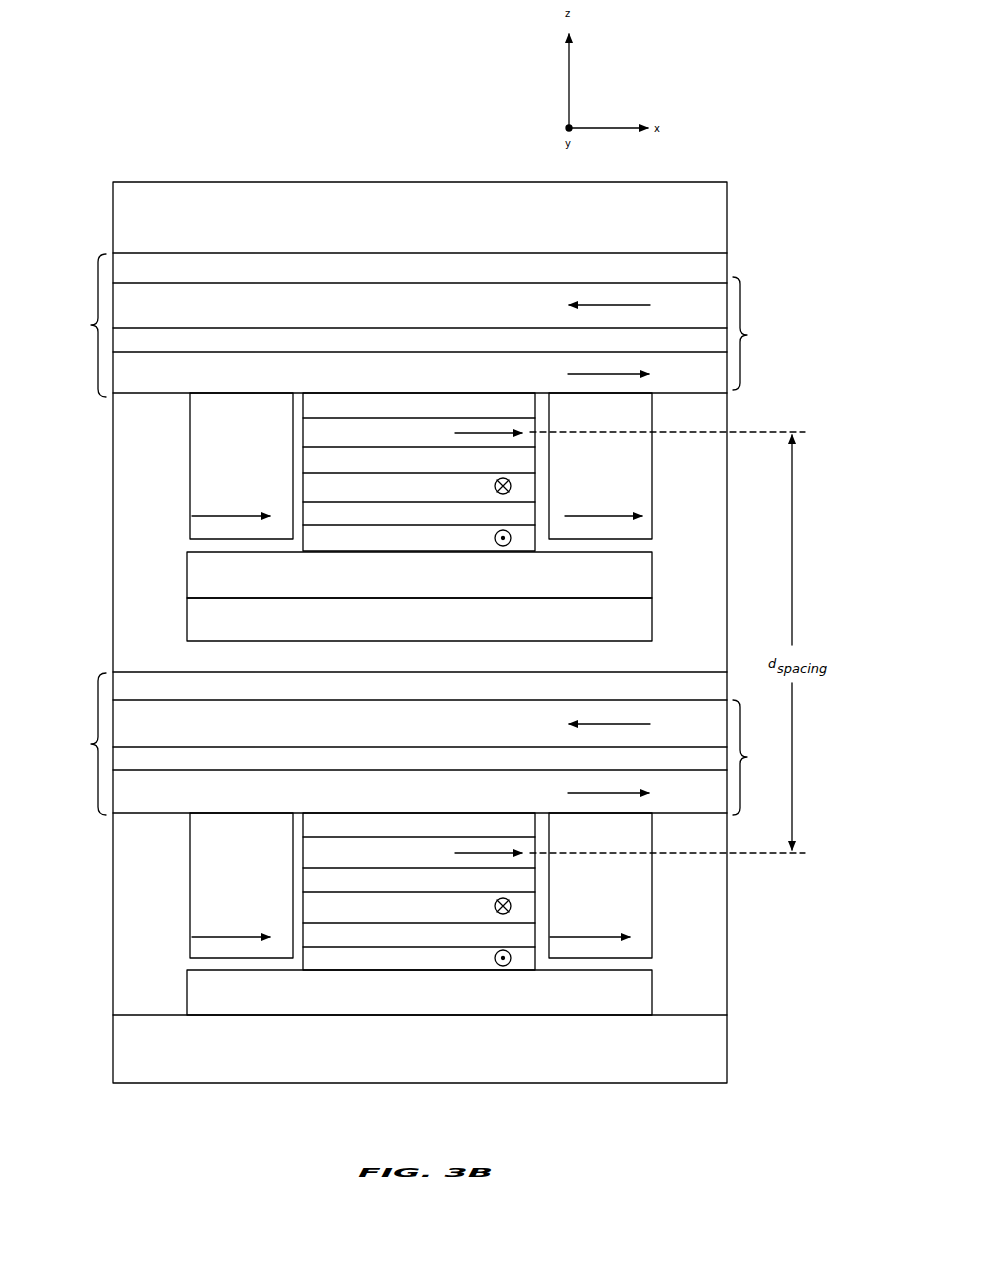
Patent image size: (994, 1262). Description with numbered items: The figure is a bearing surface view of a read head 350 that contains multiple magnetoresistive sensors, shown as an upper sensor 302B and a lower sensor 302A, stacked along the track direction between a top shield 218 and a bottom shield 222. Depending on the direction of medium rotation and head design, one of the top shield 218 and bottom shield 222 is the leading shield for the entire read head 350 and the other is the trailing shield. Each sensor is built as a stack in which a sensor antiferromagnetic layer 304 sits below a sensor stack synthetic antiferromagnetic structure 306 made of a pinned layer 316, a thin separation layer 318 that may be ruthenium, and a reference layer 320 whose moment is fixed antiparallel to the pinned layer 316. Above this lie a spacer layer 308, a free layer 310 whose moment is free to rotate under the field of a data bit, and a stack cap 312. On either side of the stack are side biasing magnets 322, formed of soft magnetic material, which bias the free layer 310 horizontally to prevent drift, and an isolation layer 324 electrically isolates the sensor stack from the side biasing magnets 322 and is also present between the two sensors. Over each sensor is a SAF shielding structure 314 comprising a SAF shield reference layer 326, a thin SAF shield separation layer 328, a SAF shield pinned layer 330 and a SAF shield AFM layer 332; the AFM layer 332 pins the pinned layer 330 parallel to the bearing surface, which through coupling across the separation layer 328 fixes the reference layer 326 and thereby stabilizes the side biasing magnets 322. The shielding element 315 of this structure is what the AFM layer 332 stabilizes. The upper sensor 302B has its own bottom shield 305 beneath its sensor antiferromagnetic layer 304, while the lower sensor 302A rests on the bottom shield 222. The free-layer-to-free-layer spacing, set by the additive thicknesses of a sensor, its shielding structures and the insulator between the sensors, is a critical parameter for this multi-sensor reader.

The read head 350 is at (258, 116).
The top shield 218 is at (420, 233).
The SAF shield AFM layer 332 is at (420, 481).
The SAF shield pinned layer 330 is at (420, 523).
The SAF shield separation layer 328 is at (420, 551).
The SAF shield reference layer 326 is at (420, 589).
The SAF shielding structure 314 is at (79, 534).
The shielding element 315 is at (757, 546).
The side biasing magnets 322 is at (421, 675).
The sensor stack synthetic antiferromagnetic structure 306 is at (542, 470).
The stack cap 312 is at (419, 619).
The free layer 310 is at (419, 647).
The spacer layer 308 is at (419, 672).
The reference layer 320 is at (419, 700).
The separation layer 318 is at (419, 726).
The pinned layer 316 is at (427, 748).
The sensor antiferromagnetic layer 304 is at (419, 783).
The bottom shield 305 is at (419, 619).
The bottom shield 222 is at (420, 1035).
The magnetoresistive sensor 302B is at (748, 421).
The magnetoresistive sensor 302A is at (742, 871).
The isolation layer 324 is at (294, 405).